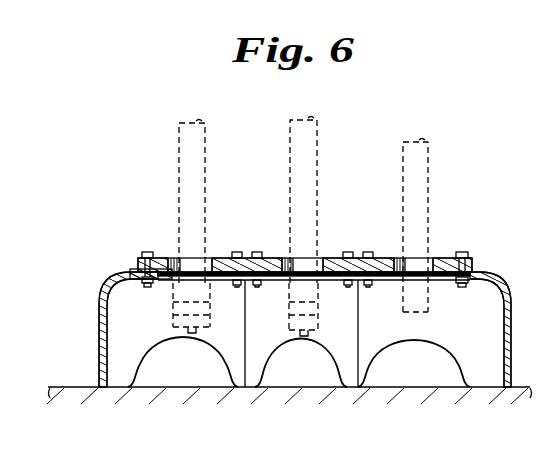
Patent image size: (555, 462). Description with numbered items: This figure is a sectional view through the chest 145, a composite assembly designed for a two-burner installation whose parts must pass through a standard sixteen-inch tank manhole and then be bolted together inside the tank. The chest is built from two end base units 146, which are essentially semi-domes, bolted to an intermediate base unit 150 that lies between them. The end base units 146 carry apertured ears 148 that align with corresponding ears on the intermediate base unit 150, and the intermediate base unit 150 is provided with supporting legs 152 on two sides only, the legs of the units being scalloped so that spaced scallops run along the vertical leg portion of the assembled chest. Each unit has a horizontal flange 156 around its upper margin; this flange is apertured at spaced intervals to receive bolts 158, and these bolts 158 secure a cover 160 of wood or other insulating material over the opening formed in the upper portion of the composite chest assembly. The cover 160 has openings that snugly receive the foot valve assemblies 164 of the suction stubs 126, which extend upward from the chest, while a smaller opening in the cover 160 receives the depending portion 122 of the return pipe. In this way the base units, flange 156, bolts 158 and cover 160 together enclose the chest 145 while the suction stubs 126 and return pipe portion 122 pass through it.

The depending portion of the return pipe 122 is at (402, 170).
The suction stubs 126 is at (289, 170).
The chest 145 is at (466, 242).
The end base units 146 is at (100, 312).
The apertured ears 148 is at (552, 382).
The intermediate base unit 150 is at (342, 345).
The supporting legs 152 is at (130, 423).
The horizontal flange 156 is at (137, 272).
The bolts 158 is at (148, 251).
The cover 160 is at (272, 262).
The foot valve assemblies 164 is at (172, 302).